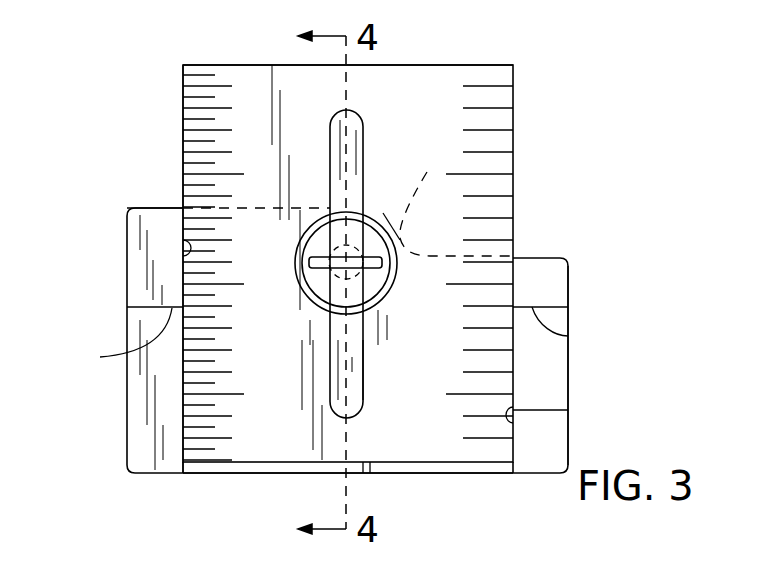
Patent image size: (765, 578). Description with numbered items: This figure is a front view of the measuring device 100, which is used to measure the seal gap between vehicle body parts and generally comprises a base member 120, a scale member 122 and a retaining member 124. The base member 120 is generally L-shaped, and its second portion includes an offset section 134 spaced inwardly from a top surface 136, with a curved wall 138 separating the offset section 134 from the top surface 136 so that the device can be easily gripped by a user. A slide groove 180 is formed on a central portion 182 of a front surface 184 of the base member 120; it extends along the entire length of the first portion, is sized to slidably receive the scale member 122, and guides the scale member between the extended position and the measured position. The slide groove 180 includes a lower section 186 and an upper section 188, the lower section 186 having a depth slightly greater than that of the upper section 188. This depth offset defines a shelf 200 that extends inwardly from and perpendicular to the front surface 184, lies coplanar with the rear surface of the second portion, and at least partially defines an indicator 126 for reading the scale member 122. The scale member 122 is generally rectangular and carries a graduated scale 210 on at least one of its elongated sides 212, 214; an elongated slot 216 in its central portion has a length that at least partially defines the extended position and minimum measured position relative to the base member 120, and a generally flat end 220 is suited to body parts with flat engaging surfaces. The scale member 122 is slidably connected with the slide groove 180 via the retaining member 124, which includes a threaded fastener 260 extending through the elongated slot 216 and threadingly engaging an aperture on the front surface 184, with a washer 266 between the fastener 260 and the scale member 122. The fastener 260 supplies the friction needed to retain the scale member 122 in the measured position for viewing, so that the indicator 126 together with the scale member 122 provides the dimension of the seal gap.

The measuring device 100 is at (625, 179).
The base member 120 is at (118, 206).
The scale member 122 is at (517, 64).
The retaining member 124 is at (375, 204).
The indicator 126 is at (608, 338).
The offset section 134 is at (531, 258).
The top surface 136 is at (158, 207).
The curved wall 138 is at (348, 199).
The slide groove 180 is at (218, 481).
The central portion 182 is at (393, 473).
The front surface 184 is at (553, 381).
The lower section 186 is at (568, 410).
The upper section 188 is at (183, 254).
The shelf 200 is at (121, 305).
The graduated scale 210 is at (199, 86).
The elongated side 212 is at (183, 92).
The elongated side 214 is at (513, 118).
The elongated slot 216 is at (357, 352).
The flat end 220 is at (432, 65).
The threaded fastener 260 is at (376, 288).
The washer 266 is at (316, 300).